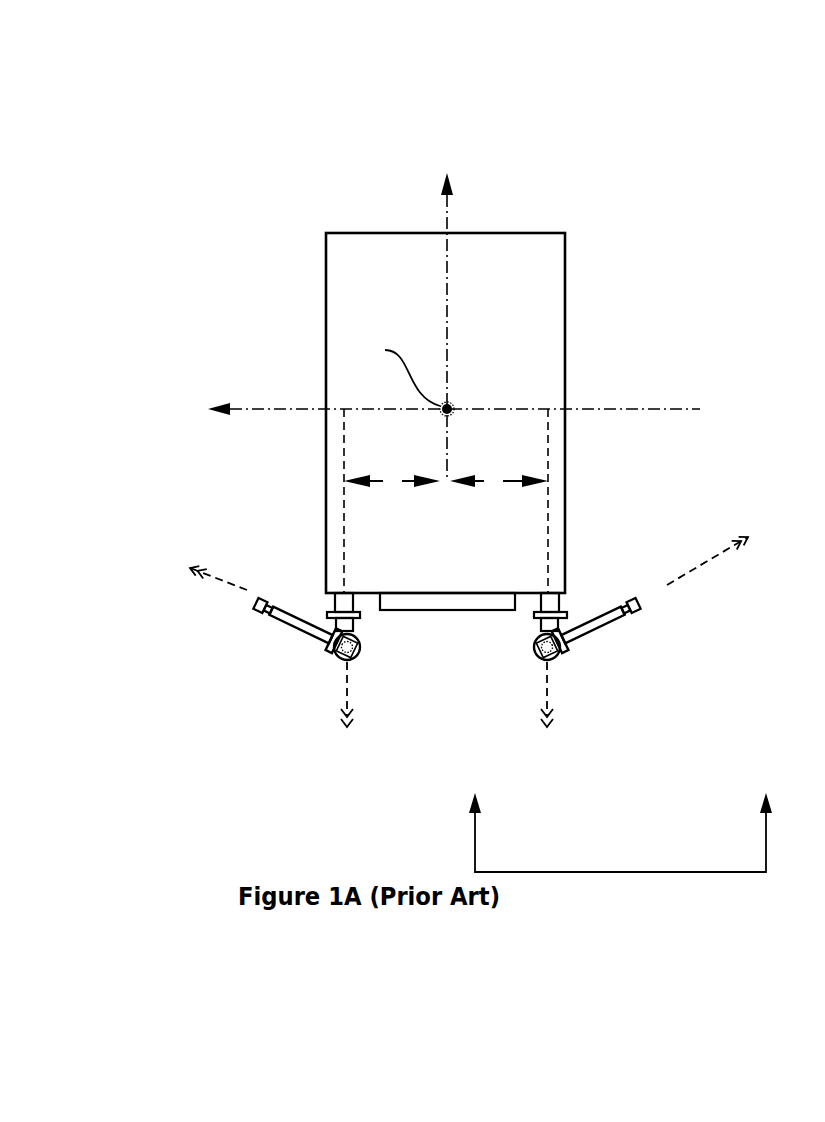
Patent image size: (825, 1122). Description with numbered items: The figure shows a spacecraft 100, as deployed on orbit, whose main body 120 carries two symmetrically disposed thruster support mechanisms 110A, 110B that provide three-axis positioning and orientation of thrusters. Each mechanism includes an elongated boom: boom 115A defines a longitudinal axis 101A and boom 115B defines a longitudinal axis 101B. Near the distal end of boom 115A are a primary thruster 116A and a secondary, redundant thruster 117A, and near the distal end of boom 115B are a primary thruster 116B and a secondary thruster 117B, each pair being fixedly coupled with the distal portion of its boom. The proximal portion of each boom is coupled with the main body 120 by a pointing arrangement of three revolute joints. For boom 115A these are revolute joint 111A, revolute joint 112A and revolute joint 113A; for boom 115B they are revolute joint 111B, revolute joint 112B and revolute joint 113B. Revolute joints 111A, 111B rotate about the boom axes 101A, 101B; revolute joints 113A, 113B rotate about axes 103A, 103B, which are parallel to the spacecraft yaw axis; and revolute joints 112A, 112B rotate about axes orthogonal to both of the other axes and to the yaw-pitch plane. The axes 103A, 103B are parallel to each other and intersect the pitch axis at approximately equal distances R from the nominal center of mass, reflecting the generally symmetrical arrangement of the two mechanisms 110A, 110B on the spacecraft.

The spacecraft 100 is at (264, 100).
The main body 120 is at (510, 368).
The thruster support mechanism 110A is at (146, 722).
The thruster support mechanism 110B is at (689, 646).
The revolute joint 111A is at (336, 678).
The revolute joint 111B is at (541, 681).
The revolute joint 112A is at (358, 648).
The revolute joint 112B is at (533, 642).
The revolute joint 113A is at (333, 608).
The revolute joint 113B is at (560, 615).
The boom 115A is at (283, 628).
The boom 115B is at (608, 625).
The primary thruster 116A is at (188, 552).
The secondary thruster 117A is at (258, 580).
The primary thruster 116B is at (665, 547).
The secondary thruster 117B is at (640, 588).
The longitudinal axis 101A is at (186, 573).
The longitudinal axis 101B is at (736, 551).
The axis 103A is at (344, 720).
The axis 103B is at (539, 719).